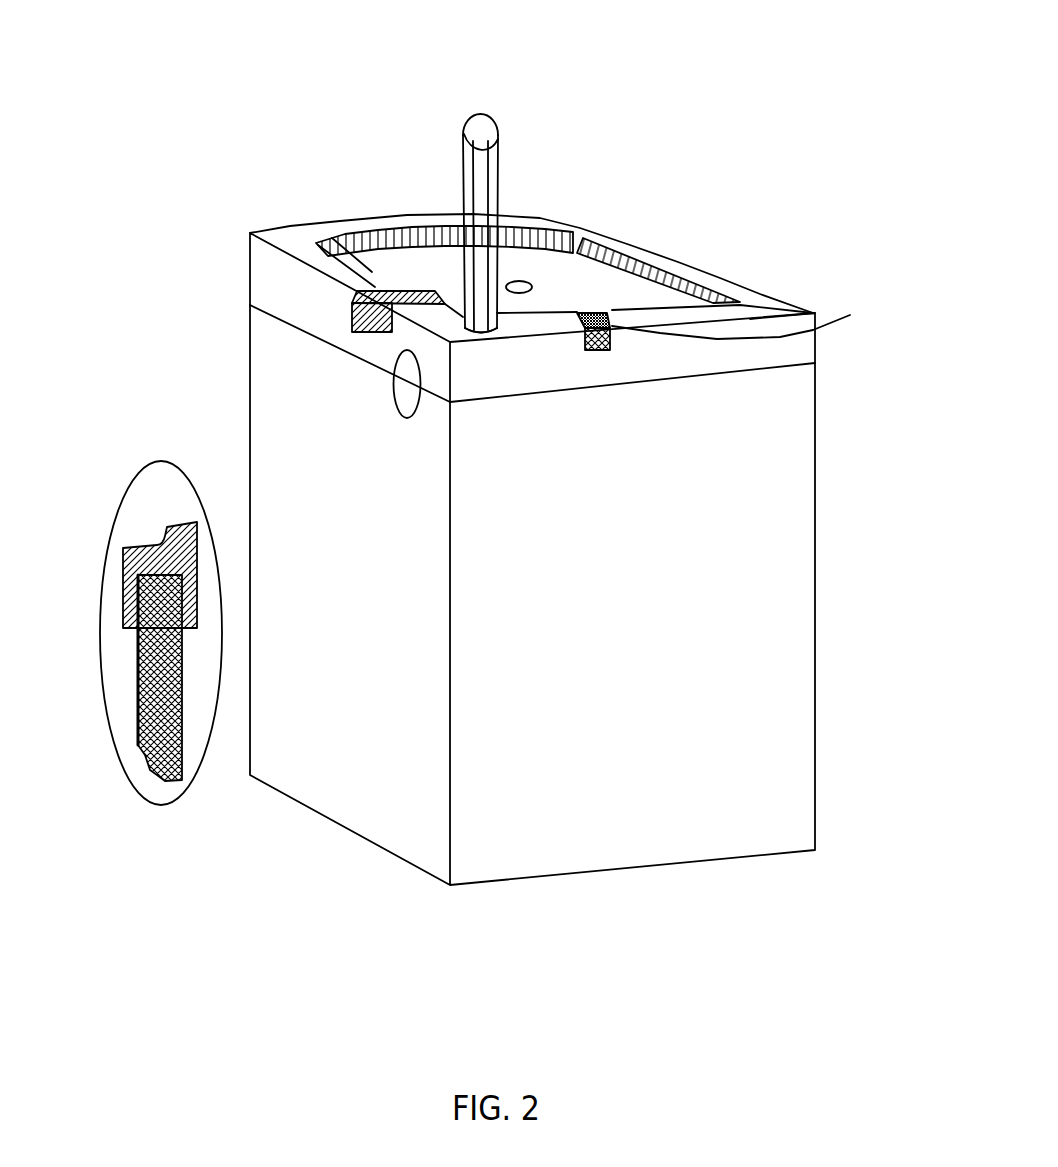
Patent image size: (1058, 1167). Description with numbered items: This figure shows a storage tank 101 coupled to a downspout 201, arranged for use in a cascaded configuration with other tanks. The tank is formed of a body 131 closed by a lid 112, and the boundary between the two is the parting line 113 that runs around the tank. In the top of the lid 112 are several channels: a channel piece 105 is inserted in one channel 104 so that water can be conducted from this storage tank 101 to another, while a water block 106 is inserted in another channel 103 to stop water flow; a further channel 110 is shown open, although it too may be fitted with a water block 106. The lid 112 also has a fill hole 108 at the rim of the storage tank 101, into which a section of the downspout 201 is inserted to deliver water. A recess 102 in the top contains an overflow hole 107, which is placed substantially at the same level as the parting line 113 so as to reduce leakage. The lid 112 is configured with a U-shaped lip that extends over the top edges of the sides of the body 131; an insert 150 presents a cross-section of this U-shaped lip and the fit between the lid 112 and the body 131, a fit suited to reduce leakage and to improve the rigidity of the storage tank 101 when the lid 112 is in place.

The storage tank 101 is at (820, 511).
The recess 102 is at (653, 293).
The channel 103 is at (850, 315).
The channel 104 is at (380, 287).
The channel piece 105 is at (352, 320).
The water block 106 is at (612, 345).
The overflow hole 107 is at (523, 283).
The fill hole 108 is at (505, 322).
The channel 110 is at (585, 235).
The lid 112 is at (812, 297).
The parting line 113 is at (815, 362).
The body 131 is at (770, 640).
The insert 150 is at (390, 382).
The downspout 201 is at (486, 112).